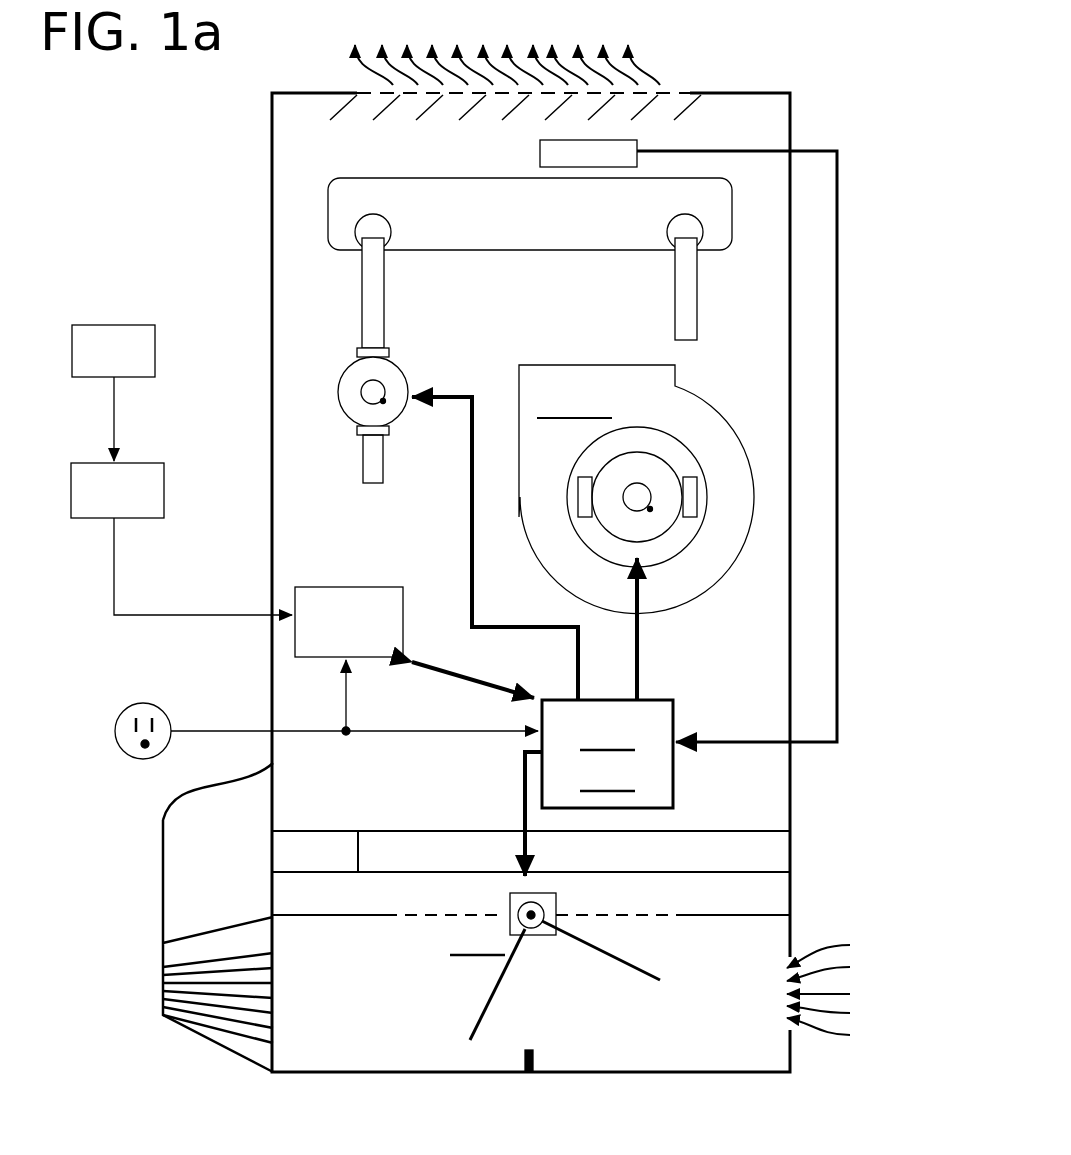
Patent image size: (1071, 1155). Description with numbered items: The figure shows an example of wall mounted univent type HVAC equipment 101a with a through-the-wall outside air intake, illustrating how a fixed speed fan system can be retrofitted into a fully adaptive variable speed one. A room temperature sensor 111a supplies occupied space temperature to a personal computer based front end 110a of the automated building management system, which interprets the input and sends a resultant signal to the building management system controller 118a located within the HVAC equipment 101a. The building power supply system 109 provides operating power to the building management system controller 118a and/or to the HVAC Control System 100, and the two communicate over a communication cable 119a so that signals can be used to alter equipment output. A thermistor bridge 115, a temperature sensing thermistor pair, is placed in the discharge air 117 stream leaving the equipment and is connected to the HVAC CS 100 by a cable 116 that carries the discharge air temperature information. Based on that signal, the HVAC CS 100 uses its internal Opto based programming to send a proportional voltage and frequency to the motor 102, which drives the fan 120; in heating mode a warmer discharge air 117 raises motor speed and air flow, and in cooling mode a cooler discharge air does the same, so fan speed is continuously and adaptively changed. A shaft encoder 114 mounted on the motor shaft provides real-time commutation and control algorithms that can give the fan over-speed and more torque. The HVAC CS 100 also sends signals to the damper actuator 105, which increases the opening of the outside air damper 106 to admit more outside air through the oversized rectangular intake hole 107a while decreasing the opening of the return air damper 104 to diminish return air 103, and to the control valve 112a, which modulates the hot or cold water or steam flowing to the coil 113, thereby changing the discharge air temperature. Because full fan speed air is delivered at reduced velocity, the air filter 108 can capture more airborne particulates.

The HVAC Control System 100 is at (663, 695).
The HVAC equipment 101a is at (266, 222).
The motor 102 is at (651, 546).
The return air 103 is at (818, 944).
The return air damper 104 is at (647, 968).
The damper actuator 105 is at (506, 898).
The outside air damper 106 is at (473, 1018).
The outside air intake hole 107a is at (148, 991).
The air filter 108 is at (673, 842).
The building power supply system 109 is at (132, 700).
The front end 110a is at (160, 522).
The room temperature sensor 111a is at (111, 323).
The control valve 112a is at (401, 378).
The heat exchanger or coil 113 is at (537, 254).
The shaft encoder 114 is at (637, 482).
The thermistor bridge 115 is at (537, 153).
The cable 116 is at (822, 140).
The discharge air 117 is at (335, 62).
The building management system controller 118a is at (344, 584).
The communication cable 119a is at (473, 676).
The fan 120 is at (552, 584).